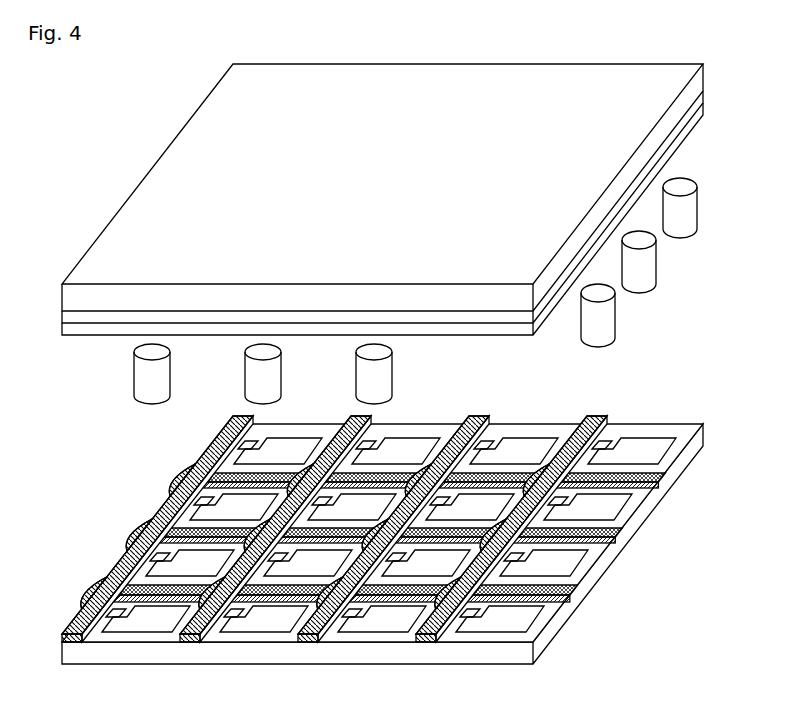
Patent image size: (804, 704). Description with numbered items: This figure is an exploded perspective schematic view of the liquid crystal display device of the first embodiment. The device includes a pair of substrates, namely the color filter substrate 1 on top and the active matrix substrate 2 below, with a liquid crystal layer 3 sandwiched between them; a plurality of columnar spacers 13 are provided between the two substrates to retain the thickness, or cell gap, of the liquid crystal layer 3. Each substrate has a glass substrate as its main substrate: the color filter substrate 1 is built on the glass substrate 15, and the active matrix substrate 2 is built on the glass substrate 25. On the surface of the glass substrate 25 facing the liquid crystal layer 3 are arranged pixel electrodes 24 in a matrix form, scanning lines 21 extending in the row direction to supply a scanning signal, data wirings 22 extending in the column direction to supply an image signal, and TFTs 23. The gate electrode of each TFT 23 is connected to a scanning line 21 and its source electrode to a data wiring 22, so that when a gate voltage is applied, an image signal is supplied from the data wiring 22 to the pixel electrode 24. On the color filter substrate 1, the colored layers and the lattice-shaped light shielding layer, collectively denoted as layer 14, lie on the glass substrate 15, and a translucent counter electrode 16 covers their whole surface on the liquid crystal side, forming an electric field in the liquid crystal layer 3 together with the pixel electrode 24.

The color filter substrate 1 is at (53, 284).
The active matrix substrate 2 is at (53, 618).
The liquid crystal layer 3 is at (53, 343).
The columnar spacer 13 is at (682, 213).
The colored layers and light shielding layer 14 is at (673, 137).
The glass substrate 15 is at (678, 107).
The counter electrode 16 is at (663, 163).
The scanning line 21 is at (617, 537).
The data wiring 22 is at (602, 417).
The TFT 23 is at (570, 508).
The pixel electrode 24 is at (612, 507).
The glass substrate 25 is at (690, 448).